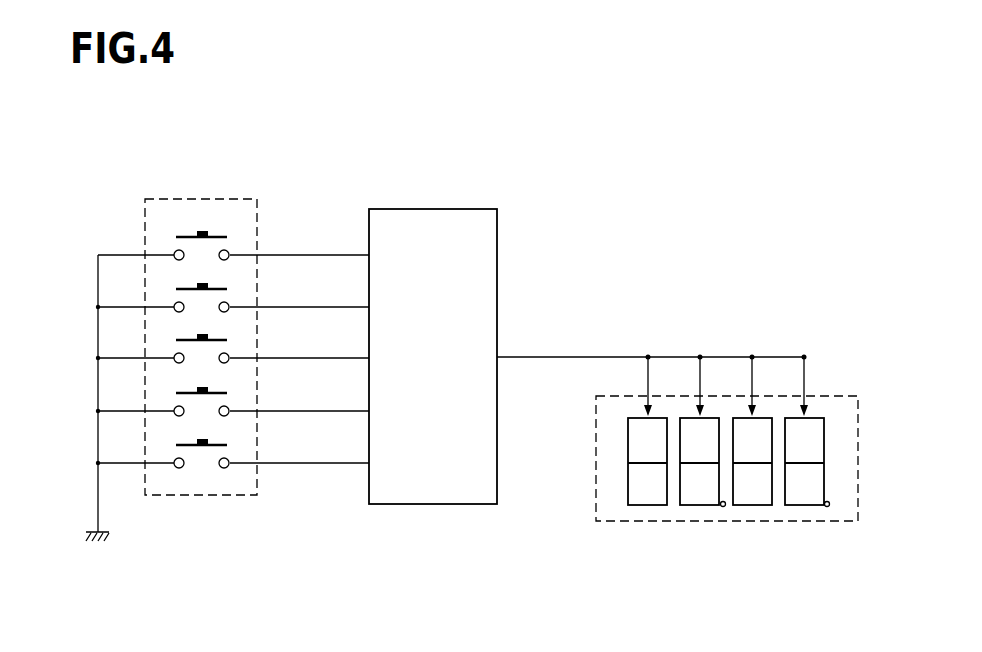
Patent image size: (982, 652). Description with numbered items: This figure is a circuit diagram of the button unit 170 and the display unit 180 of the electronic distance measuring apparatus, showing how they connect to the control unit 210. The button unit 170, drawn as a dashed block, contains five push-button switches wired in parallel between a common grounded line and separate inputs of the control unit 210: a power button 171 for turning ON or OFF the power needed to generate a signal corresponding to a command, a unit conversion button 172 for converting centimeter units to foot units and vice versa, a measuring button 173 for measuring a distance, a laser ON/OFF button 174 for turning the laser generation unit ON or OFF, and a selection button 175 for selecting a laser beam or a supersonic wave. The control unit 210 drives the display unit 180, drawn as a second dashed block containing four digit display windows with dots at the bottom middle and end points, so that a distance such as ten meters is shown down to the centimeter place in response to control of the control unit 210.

The button unit 170 is at (200, 199).
The power button 171 is at (224, 238).
The unit conversion button 172 is at (224, 290).
The measuring button 173 is at (224, 341).
The laser ON/OFF button 174 is at (224, 394).
The selection button 175 is at (224, 446).
The control unit 210 is at (497, 251).
The display unit 180 is at (838, 396).